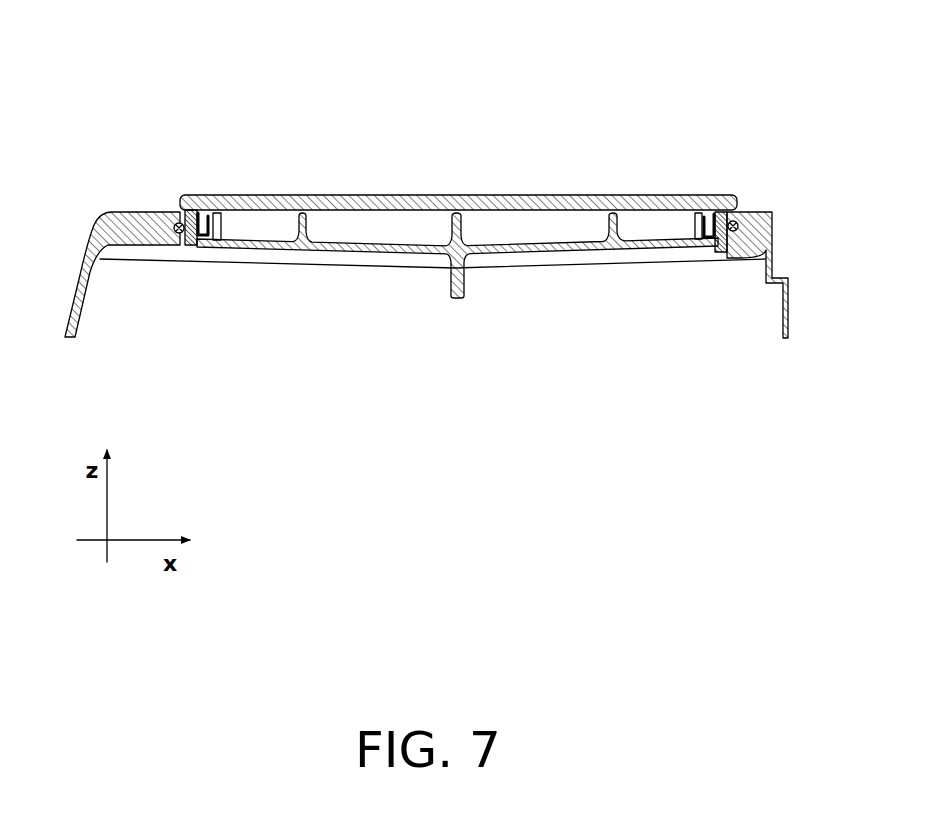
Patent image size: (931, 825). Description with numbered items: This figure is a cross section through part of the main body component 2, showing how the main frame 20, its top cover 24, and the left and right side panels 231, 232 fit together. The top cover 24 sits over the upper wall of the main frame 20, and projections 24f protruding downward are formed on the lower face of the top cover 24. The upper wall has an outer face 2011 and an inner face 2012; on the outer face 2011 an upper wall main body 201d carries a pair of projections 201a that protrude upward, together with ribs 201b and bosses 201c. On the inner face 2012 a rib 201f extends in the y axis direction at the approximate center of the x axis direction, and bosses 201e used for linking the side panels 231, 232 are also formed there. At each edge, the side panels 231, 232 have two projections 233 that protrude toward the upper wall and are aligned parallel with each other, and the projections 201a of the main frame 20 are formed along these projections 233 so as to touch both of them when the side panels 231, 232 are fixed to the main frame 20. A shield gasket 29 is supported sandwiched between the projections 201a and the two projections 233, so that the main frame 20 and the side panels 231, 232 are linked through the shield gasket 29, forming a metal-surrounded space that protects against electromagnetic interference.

The main body component 2 is at (185, 72).
The main frame 20 is at (350, 345).
The top cover 24 is at (488, 196).
The projections 24f is at (197, 209).
The shield gasket 29 is at (177, 220).
The projections 201a is at (197, 215).
The ribs 201b is at (317, 197).
The bosses 201c is at (222, 225).
The upper wall main body 201d is at (418, 243).
The bosses 201e is at (510, 270).
The rib 201f is at (458, 300).
The outer face 2011 is at (374, 243).
The inner face 2012 is at (372, 263).
The left side panel 231 is at (776, 240).
The right side panel 232 is at (97, 251).
The projections 233 is at (186, 263).